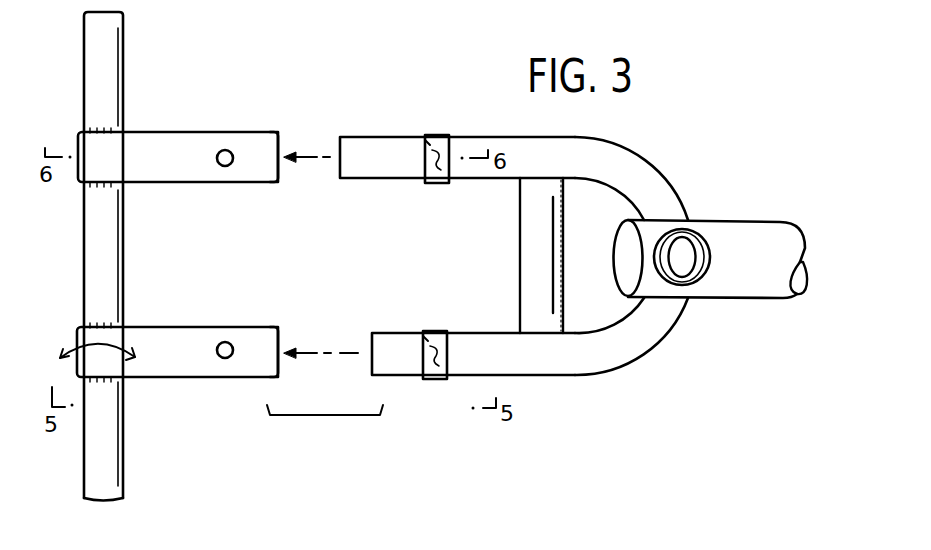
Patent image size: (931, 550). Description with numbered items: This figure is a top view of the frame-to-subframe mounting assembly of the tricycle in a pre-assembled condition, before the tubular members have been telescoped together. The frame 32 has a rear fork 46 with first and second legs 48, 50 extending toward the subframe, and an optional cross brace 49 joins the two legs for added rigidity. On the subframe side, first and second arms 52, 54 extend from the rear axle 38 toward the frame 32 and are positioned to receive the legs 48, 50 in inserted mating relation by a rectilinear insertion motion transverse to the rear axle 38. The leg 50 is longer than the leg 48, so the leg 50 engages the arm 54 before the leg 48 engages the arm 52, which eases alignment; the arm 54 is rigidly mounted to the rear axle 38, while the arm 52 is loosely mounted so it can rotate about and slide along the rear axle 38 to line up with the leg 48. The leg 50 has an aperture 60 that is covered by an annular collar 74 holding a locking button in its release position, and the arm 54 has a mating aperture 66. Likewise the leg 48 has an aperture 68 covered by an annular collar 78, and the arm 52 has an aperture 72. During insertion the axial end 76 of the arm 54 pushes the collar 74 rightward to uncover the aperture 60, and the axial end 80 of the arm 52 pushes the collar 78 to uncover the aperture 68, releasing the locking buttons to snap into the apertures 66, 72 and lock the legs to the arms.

The frame 32 is at (738, 300).
The rear axle 38 is at (122, 481).
The rear fork 46 is at (663, 328).
The first leg 48 is at (473, 333).
The cross brace 49 is at (522, 225).
The second leg 50 is at (475, 137).
The first arm 52 is at (178, 380).
The second arm 54 is at (186, 183).
The aperture 60 is at (426, 133).
The aperture 66 is at (223, 150).
The aperture 68 is at (424, 329).
The aperture 72 is at (224, 342).
The annular collar 74 is at (434, 140).
The axial end 76 is at (284, 135).
The annular collar 78 is at (434, 336).
The axial end 80 is at (283, 328).